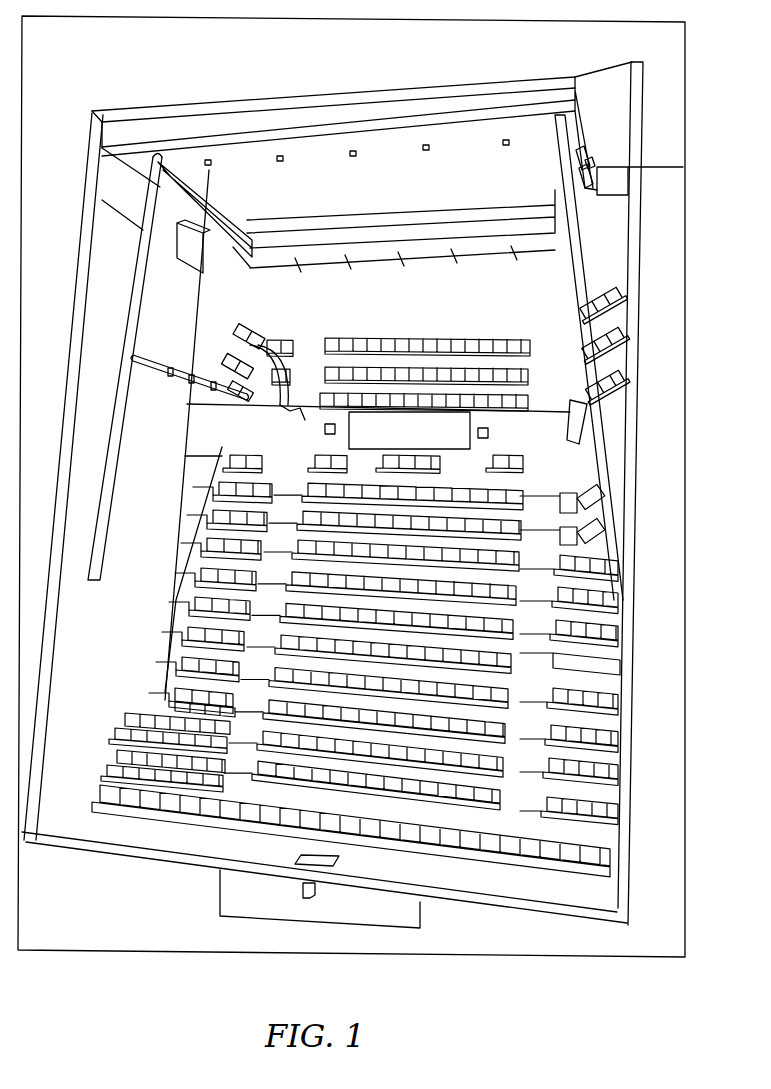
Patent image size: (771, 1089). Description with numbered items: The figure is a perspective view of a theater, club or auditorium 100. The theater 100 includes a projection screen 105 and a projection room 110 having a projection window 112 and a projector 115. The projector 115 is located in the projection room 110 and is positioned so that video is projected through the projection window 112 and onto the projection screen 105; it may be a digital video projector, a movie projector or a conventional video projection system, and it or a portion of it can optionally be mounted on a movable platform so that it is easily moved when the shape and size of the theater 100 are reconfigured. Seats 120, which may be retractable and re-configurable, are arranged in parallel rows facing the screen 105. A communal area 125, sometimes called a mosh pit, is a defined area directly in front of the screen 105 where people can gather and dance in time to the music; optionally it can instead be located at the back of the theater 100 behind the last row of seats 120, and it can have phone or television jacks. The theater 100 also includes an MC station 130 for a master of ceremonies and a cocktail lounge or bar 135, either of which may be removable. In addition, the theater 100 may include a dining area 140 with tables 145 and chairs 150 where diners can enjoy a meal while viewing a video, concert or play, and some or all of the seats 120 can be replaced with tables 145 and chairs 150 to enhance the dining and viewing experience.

The theater 100 is at (203, 77).
The projection screen 105 is at (592, 172).
The projection room 110 is at (270, 905).
The projection window 112 is at (300, 858).
The projector 115 is at (308, 898).
The seats 120 is at (582, 502).
The communal area 125 is at (326, 316).
The MC station 130 is at (578, 412).
The bar 135 is at (215, 398).
The dining area 140 is at (322, 429).
The tables 145 is at (428, 439).
The chairs 150 is at (490, 433).